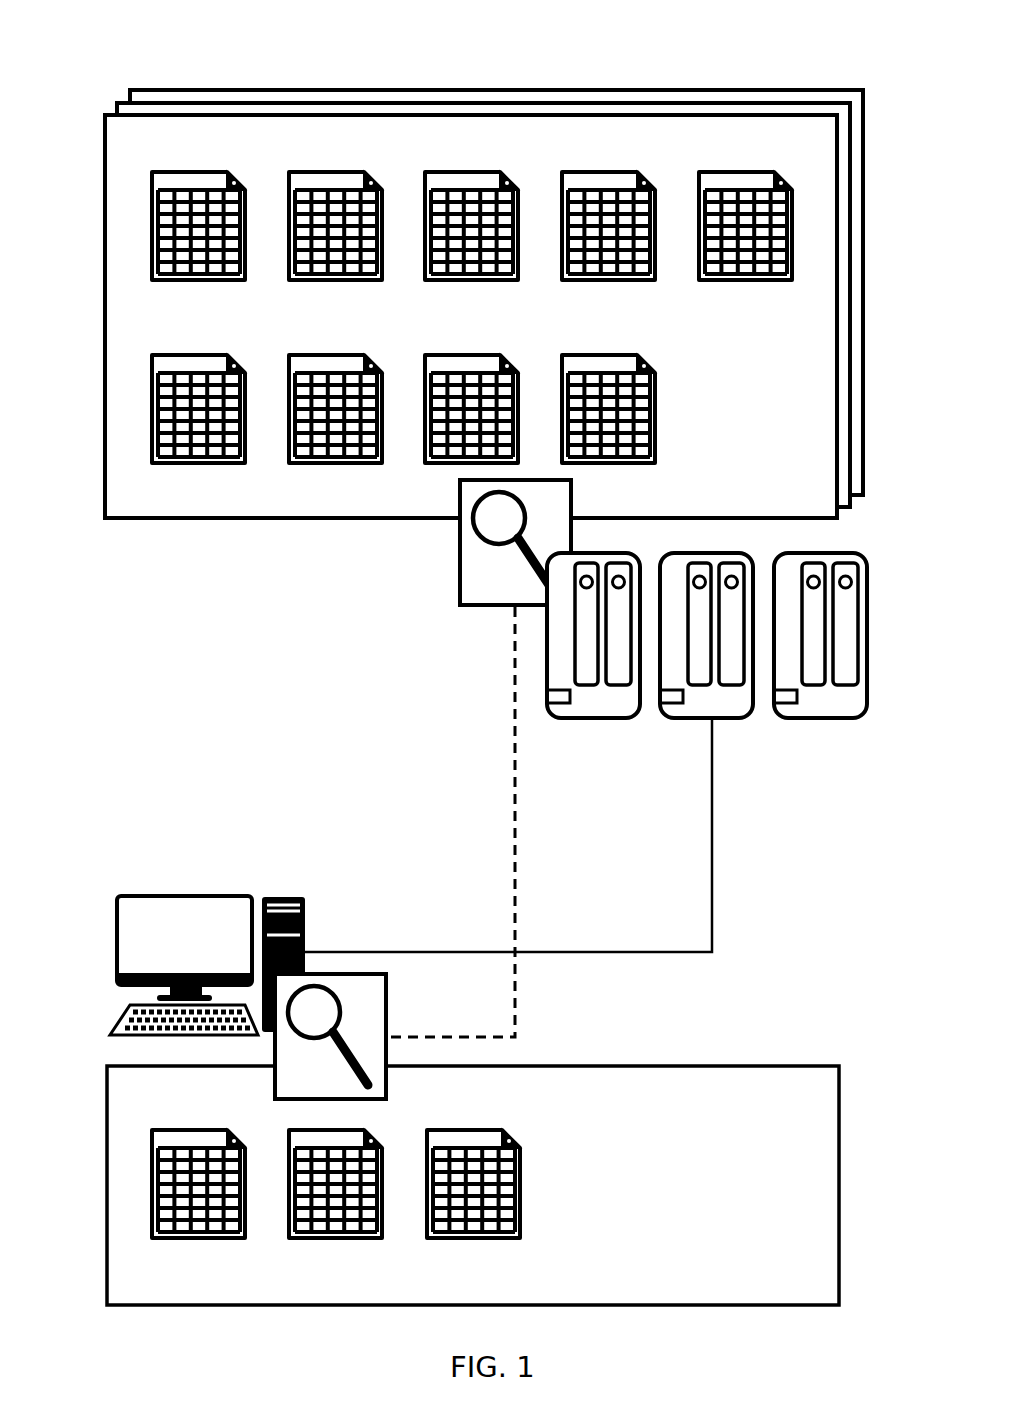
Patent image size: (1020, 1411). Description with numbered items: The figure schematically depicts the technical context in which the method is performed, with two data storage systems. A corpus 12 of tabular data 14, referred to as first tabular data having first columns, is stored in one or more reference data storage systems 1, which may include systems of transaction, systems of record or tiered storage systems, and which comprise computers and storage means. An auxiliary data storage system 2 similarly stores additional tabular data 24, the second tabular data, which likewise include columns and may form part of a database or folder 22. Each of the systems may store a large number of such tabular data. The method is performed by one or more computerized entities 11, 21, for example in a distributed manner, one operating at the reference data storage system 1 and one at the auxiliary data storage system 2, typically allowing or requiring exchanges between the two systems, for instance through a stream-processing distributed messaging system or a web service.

The reference data storage system 1 is at (868, 722).
The auxiliary data storage system 2 is at (300, 882).
The computerized entity 11 is at (453, 607).
The corpus 12 is at (830, 90).
The tabular data 14 is at (147, 395).
The computerized entity 21 is at (390, 1000).
The folder 22 is at (715, 1066).
The tabular data 24 is at (518, 1165).